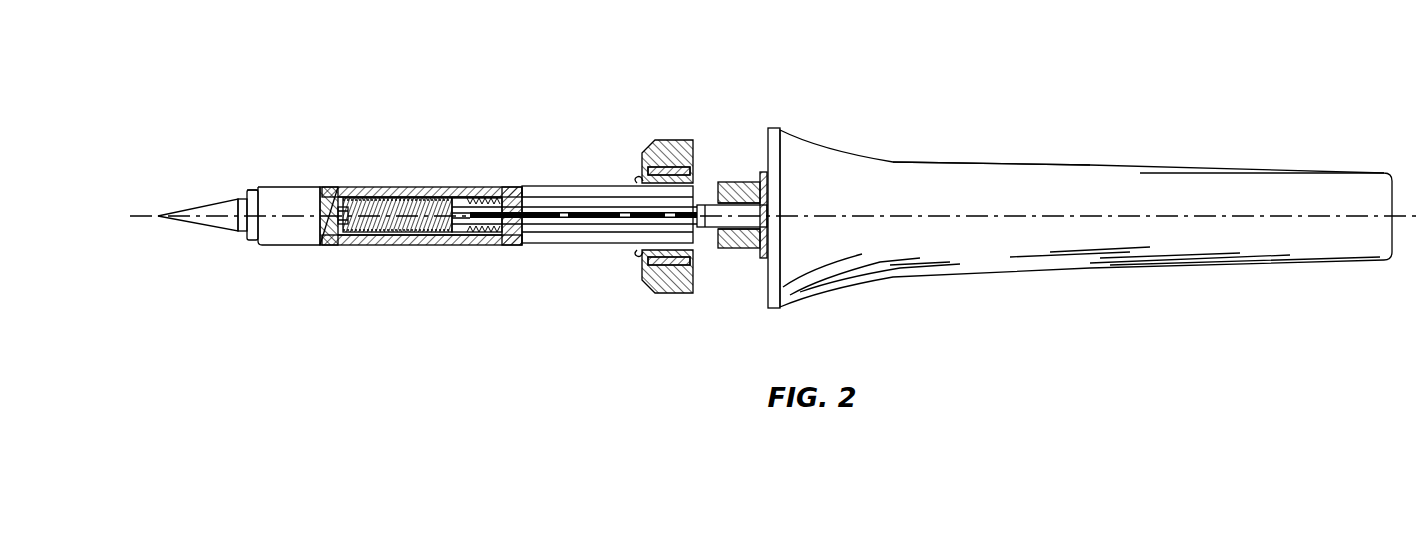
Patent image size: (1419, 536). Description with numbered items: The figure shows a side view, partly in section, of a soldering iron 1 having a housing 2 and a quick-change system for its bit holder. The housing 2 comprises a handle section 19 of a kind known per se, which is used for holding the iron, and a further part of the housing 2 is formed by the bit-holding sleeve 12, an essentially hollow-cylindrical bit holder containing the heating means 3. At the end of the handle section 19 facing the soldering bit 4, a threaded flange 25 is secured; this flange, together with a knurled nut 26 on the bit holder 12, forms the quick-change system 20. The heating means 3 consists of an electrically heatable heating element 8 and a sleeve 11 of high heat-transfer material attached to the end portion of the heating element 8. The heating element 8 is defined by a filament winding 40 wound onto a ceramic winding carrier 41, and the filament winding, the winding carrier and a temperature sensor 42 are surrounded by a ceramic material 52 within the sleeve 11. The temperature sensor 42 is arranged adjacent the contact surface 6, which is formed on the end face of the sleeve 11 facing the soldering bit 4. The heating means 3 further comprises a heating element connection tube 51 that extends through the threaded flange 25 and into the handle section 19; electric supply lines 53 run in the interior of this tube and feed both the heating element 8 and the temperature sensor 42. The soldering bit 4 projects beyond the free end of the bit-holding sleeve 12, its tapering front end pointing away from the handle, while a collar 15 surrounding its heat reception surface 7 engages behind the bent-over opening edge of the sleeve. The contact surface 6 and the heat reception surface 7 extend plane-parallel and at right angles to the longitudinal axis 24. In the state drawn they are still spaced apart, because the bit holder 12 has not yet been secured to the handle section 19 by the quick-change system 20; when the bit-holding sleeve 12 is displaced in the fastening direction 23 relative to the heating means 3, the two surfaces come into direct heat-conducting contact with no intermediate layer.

The soldering iron 1 is at (785, 93).
The housing 2 is at (839, 121).
The heating means 3 is at (500, 175).
The soldering bit 4 is at (223, 218).
The contact surface 6 is at (312, 197).
The heat reception surface 7 is at (263, 195).
The heating element 8 is at (412, 186).
The sleeve 11 is at (365, 195).
The bit-holding sleeve 12 is at (562, 188).
The collar 15 is at (243, 197).
The handle section 19 is at (1000, 190).
The quick-change system 20 is at (630, 126).
The fastening direction 23 is at (282, 297).
The longitudinal axis 24 is at (1146, 215).
The threaded flange 25 is at (734, 165).
The knurled nut 26 is at (668, 140).
The filament winding 40 is at (400, 243).
The ceramic winding carrier 41 is at (472, 243).
The temperature sensor 42 is at (325, 197).
The heating element connection tube 51 is at (705, 240).
The ceramic material 52 is at (467, 195).
The electric supply lines 53 is at (603, 230).